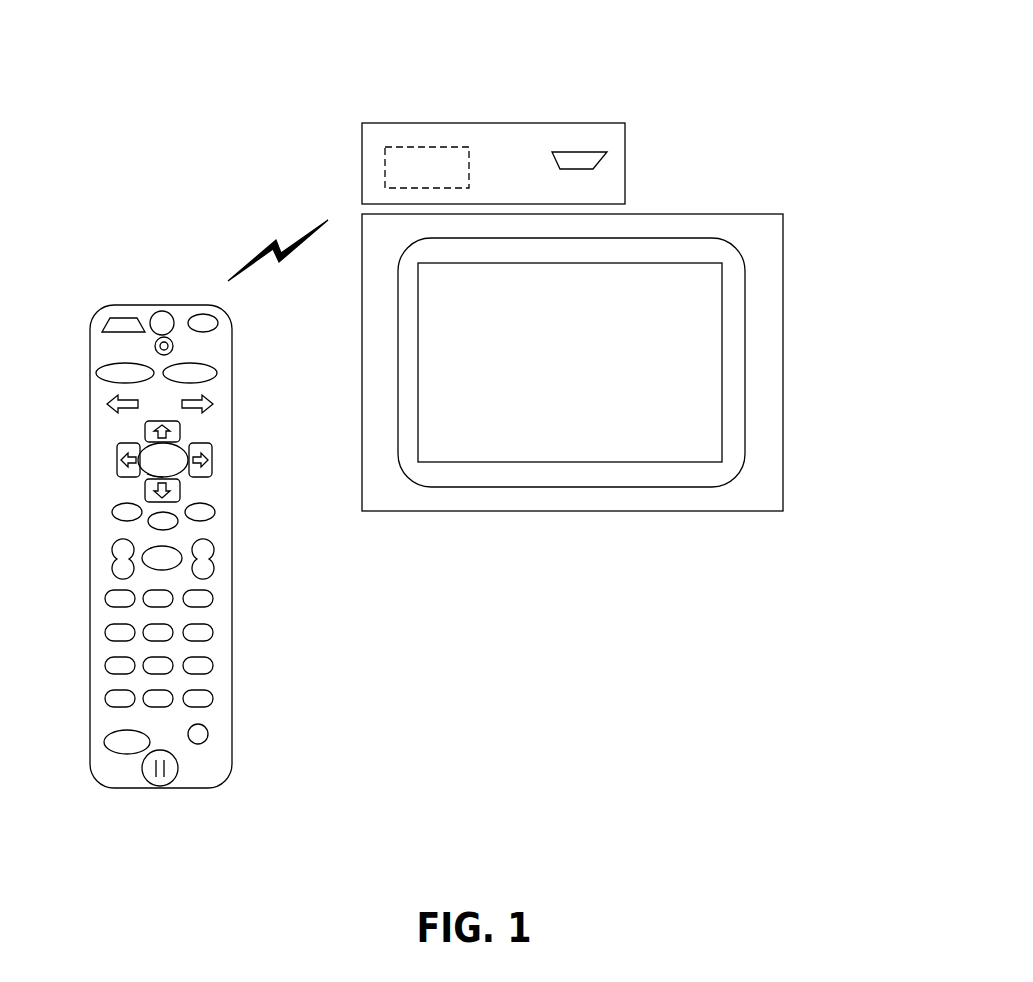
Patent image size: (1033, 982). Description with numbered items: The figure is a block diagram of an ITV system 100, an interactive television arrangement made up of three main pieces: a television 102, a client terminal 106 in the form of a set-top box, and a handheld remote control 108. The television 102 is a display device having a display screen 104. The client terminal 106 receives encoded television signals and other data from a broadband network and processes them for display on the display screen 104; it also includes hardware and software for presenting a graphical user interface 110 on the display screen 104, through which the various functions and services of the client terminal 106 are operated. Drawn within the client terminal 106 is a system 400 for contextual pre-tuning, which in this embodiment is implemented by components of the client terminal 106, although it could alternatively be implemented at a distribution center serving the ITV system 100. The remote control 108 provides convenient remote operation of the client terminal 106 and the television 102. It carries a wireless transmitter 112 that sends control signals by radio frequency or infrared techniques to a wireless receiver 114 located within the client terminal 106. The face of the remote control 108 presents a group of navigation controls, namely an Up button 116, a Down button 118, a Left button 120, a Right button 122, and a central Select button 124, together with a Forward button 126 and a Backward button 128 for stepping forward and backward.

The ITV system 100 is at (708, 40).
The television 102 is at (783, 270).
The display screen 104 is at (745, 350).
The client terminal 106 is at (433, 123).
The remote control 108 is at (231, 638).
The graphical user interface 110 is at (722, 415).
The wireless transmitter 112 is at (118, 317).
The wireless receiver 114 is at (604, 155).
The Up button 116 is at (180, 435).
The Down button 118 is at (180, 490).
The Left button 120 is at (117, 458).
The Right button 122 is at (212, 460).
The Select button 124 is at (147, 474).
The Forward button 126 is at (213, 404).
The Backward button 128 is at (112, 405).
The system for contextual pre-tuning 400 is at (440, 177).